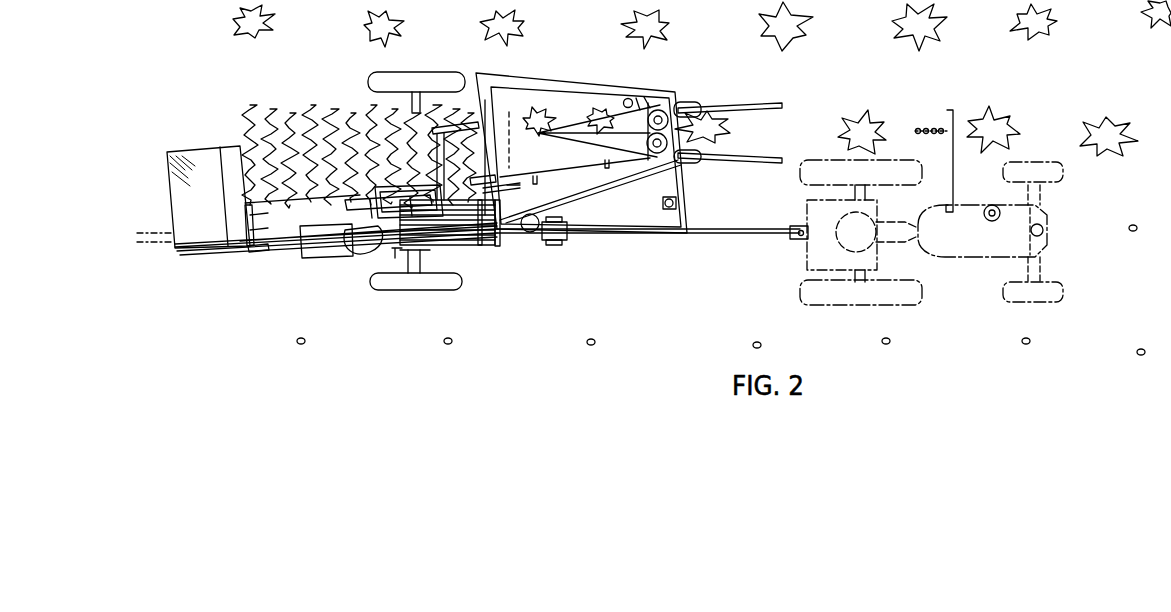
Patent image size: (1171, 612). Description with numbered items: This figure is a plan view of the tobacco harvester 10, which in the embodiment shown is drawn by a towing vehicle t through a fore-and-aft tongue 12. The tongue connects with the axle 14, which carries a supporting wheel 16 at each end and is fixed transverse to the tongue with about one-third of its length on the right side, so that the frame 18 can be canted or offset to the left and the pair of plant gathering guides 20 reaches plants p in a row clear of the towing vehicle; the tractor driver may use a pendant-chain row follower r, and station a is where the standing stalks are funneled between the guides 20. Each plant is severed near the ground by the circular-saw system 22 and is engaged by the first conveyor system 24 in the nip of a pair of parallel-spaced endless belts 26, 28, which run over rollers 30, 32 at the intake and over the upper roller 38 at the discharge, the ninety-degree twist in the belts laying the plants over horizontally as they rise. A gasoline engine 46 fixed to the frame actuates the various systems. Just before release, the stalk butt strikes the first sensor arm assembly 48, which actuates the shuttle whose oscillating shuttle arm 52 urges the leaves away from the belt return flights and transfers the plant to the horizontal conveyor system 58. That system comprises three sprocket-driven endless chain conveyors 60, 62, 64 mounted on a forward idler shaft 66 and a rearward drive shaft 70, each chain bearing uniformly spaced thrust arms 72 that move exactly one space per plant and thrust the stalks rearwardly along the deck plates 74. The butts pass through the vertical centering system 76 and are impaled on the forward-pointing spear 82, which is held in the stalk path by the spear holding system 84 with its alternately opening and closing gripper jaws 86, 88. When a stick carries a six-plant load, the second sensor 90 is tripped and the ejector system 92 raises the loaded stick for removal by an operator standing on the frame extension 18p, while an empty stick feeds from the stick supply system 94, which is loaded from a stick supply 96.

The invention 10 is at (806, 73).
The tongue 12 is at (735, 234).
The axle 14 is at (432, 270).
The supporting wheel 16 is at (460, 283).
The frame 18 is at (684, 186).
The frame extension 18p is at (181, 218).
The plant gathering guides 20 is at (743, 160).
The circular-saw system 22 is at (690, 102).
The first conveyor system 24 is at (562, 117).
The endless belt 26 is at (627, 160).
The endless belt 28 is at (622, 108).
The roller 30 is at (653, 155).
The roller 32 is at (658, 110).
The upper roller 38 is at (508, 130).
The gasoline engine 46 is at (554, 246).
The first sensor arm assembly 48 is at (511, 190).
The shuttle arm 52 is at (487, 188).
The horizontal conveyor system 58 is at (432, 245).
The endless chain conveyor 60 is at (480, 210).
The endless chain conveyor 62 is at (478, 180).
The endless chain conveyor 64 is at (478, 95).
The forward idler shaft 66 is at (498, 238).
The rearward drive shaft 70 is at (247, 253).
The thrust arms 72 is at (250, 147).
The deck plates 74 is at (252, 167).
The vertical centering system 76 is at (452, 170).
The spear 82 is at (437, 180).
The spear holding system 84 is at (392, 247).
The gripper jaws 86 is at (423, 218).
The gripper jaws 88 is at (355, 262).
The second sensor 90 is at (250, 210).
The ejector system 92 is at (300, 195).
The stick supply system 94 is at (262, 255).
The stick supply 96 is at (432, 250).
The Station A a is at (145, 246).
The plants p is at (740, 131).
The pendant-chain row follower r is at (925, 129).
The towing vehicle t is at (973, 202).